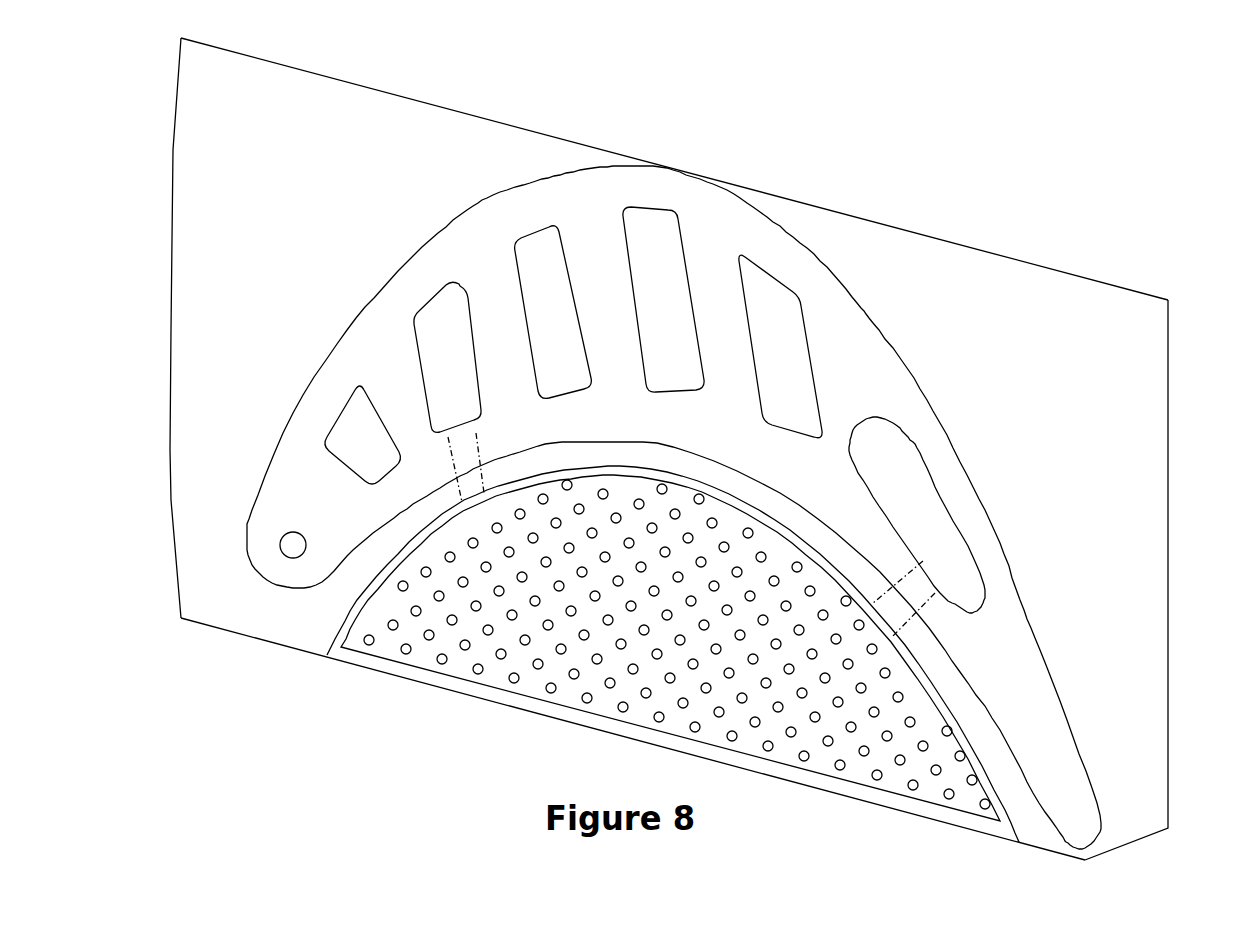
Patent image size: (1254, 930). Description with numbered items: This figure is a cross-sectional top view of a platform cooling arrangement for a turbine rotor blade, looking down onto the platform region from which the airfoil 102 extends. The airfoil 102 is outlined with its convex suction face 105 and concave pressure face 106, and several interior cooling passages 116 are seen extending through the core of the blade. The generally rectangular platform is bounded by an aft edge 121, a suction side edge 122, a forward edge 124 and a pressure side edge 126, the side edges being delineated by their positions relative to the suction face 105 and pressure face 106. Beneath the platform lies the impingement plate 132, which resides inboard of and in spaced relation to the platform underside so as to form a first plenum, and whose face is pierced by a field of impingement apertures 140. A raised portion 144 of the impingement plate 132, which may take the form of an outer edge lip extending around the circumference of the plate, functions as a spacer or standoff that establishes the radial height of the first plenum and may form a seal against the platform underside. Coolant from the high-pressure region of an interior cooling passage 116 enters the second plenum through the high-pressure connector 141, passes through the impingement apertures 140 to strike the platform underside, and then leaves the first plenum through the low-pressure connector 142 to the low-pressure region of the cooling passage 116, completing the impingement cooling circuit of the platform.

The airfoil 102 is at (604, 207).
The suction face 105 is at (674, 469).
The pressure face 106 is at (700, 620).
The cooling passages 116 is at (377, 449).
The aft edge 121 is at (1169, 446).
The suction side edge 122 is at (833, 210).
The forward edge 124 is at (170, 205).
The pressure side edge 126 is at (232, 632).
The impingement plate 132 is at (476, 635).
The impingement apertures 140 is at (677, 653).
The high-pressure connector 141 is at (480, 443).
The low-pressure connector 142 is at (923, 590).
The raised portion 144 is at (337, 657).